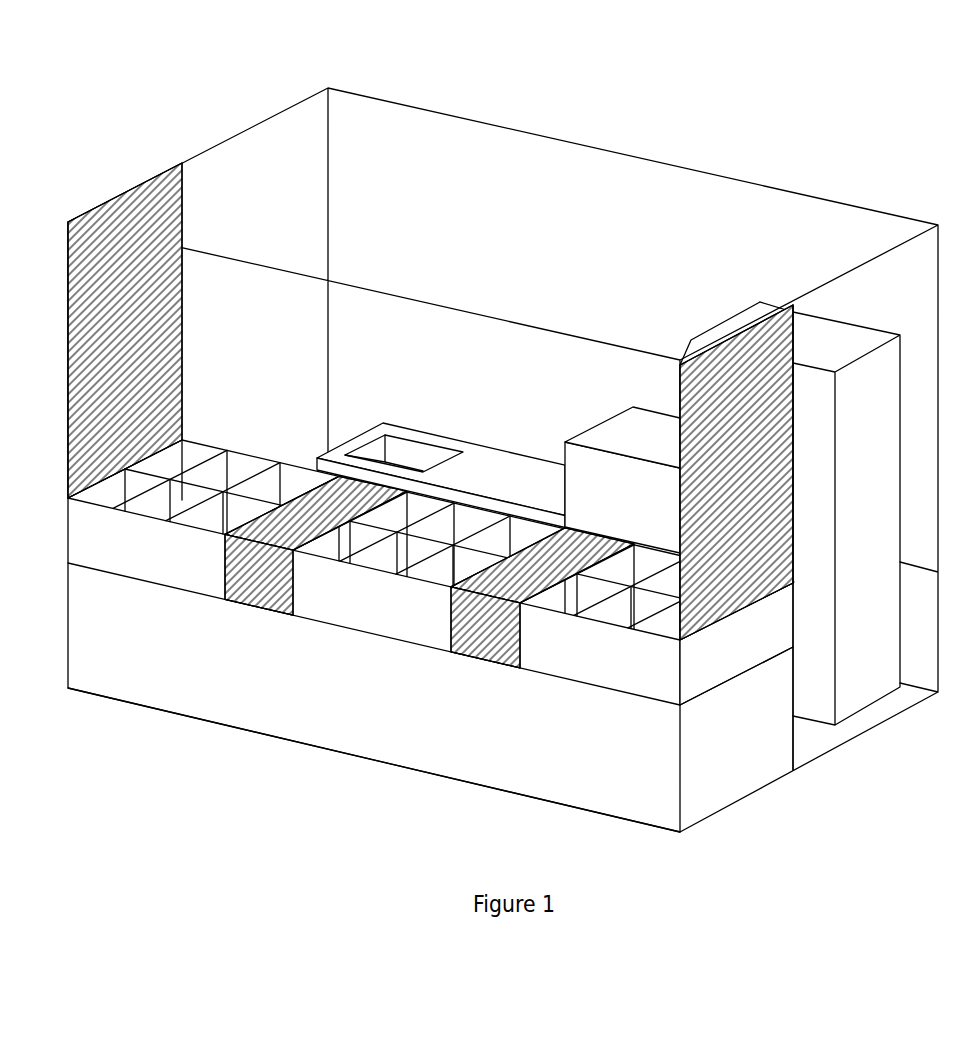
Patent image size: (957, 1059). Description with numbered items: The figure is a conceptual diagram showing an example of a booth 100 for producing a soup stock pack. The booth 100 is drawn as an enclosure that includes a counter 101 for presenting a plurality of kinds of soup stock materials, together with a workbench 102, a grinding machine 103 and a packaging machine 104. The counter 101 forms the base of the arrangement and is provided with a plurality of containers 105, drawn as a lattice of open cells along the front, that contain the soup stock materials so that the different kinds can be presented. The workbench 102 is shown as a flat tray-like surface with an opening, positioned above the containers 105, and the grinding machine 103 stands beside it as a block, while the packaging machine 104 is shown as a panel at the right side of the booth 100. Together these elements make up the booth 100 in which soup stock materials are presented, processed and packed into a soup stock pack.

The booth 100 is at (630, 113).
The counter 101 is at (247, 633).
The workbench 102 is at (513, 466).
The grinding machine 103 is at (615, 440).
The packaging machine 104 is at (738, 308).
The containers 105 is at (417, 550).